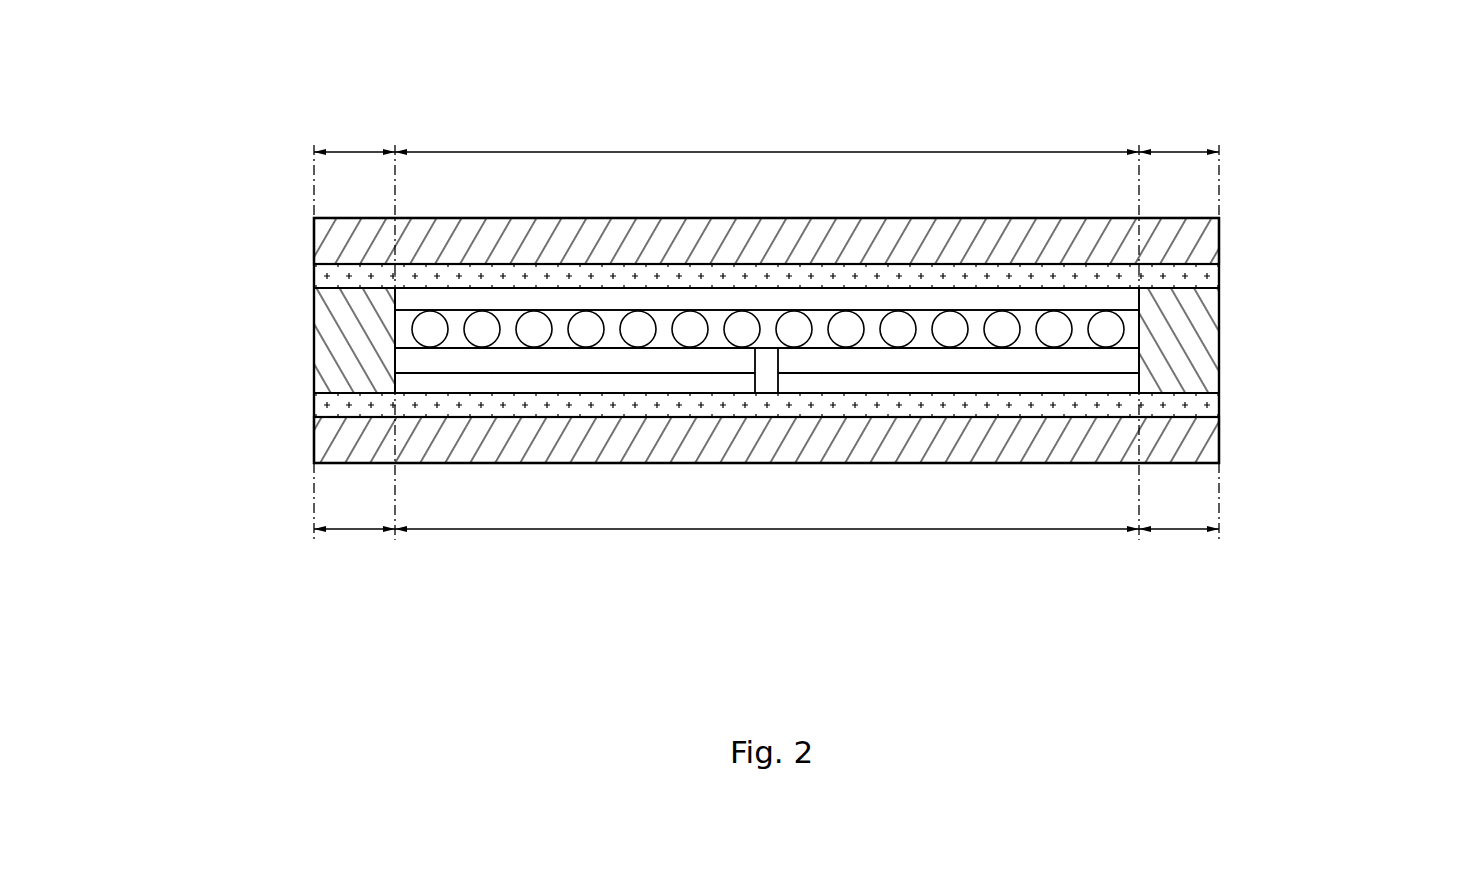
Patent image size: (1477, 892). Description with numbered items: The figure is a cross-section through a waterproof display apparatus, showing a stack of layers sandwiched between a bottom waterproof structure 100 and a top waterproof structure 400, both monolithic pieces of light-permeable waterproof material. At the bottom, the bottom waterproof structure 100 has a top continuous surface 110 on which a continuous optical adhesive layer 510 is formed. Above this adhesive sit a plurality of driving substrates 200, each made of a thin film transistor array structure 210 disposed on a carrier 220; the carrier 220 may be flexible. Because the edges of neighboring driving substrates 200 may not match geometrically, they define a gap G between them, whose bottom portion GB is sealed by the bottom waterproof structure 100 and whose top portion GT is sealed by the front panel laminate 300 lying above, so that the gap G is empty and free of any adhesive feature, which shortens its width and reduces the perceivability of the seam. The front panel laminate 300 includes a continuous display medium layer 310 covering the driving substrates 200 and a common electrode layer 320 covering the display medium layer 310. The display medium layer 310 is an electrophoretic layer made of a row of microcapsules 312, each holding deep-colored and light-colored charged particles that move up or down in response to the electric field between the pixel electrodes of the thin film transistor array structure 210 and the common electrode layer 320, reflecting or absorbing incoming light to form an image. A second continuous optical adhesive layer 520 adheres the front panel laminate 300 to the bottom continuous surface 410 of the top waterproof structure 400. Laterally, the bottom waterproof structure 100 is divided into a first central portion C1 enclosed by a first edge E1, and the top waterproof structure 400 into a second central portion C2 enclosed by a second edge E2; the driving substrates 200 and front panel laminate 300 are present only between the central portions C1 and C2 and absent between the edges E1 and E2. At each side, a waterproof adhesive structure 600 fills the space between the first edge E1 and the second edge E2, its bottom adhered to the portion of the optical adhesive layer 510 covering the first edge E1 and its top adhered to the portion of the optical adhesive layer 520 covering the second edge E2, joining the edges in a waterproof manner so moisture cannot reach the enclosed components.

The bottom waterproof structure 100 is at (333, 443).
The top continuous surface 110 is at (317, 425).
The driving substrate 200 is at (157, 347).
The thin film transistor array structure 210 is at (408, 360).
The carrier 220 is at (408, 382).
The front panel laminate 300 is at (157, 217).
The display medium layer 310 is at (408, 317).
The microcapsule 312 is at (430, 323).
The common electrode layer 320 is at (408, 298).
The top waterproof structure 400 is at (1200, 232).
The bottom continuous surface 410 is at (1200, 252).
The optical adhesive layer 510 is at (1212, 405).
The optical adhesive layer 520 is at (1200, 280).
The waterproof adhesive structure 600 is at (337, 327).
The gap G is at (786, 375).
The top portion of the gap GT is at (768, 336).
The bottom portion of the gap GB is at (759, 402).
The first edge E1 is at (766, 545).
The second edge E2 is at (766, 137).
The first central portion C1 is at (767, 545).
The second central portion C2 is at (767, 137).